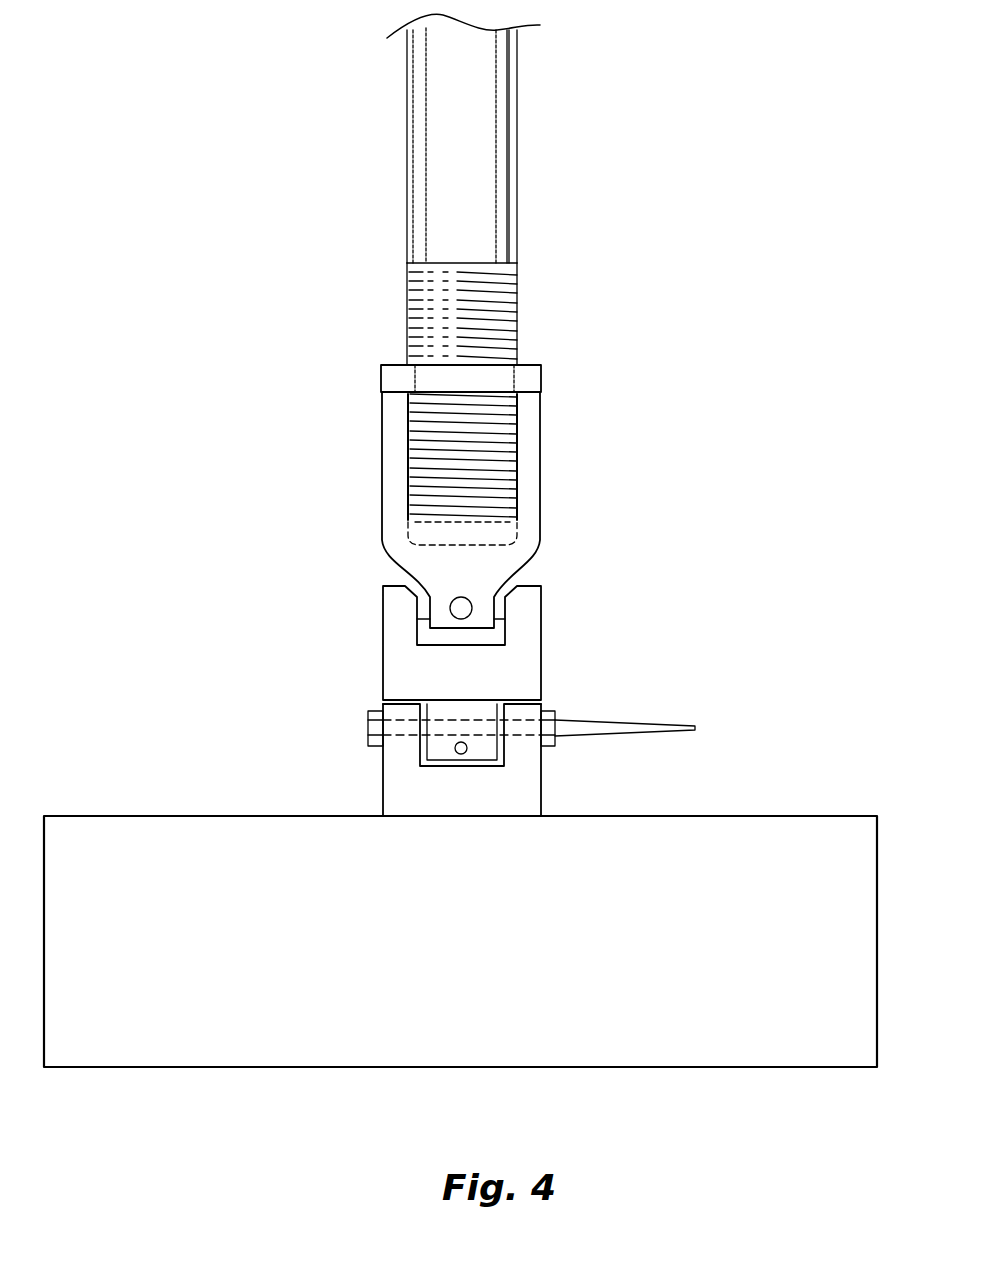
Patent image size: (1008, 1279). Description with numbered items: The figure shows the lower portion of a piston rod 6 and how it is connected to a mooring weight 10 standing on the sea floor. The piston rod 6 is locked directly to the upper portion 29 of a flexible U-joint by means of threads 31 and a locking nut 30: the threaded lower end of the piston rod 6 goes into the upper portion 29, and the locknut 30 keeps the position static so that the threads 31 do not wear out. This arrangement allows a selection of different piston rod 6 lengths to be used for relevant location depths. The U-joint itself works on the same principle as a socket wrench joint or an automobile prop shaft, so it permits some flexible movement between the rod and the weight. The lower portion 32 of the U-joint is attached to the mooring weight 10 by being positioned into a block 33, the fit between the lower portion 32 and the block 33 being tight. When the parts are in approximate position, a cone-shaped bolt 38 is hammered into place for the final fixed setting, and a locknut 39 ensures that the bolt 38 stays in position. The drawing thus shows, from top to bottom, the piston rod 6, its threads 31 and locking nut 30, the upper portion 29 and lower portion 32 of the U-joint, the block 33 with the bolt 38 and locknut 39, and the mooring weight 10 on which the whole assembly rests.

The piston rod 6 is at (445, 165).
The threads 31 is at (421, 300).
The locking nut 30 is at (390, 380).
The upper portion of U-joint 29 is at (400, 544).
The lower portion of U-joint 32 is at (390, 657).
The block 33 is at (403, 787).
The locknut 39 is at (545, 713).
The bolt 38 is at (658, 727).
The mooring weight 10 is at (776, 815).